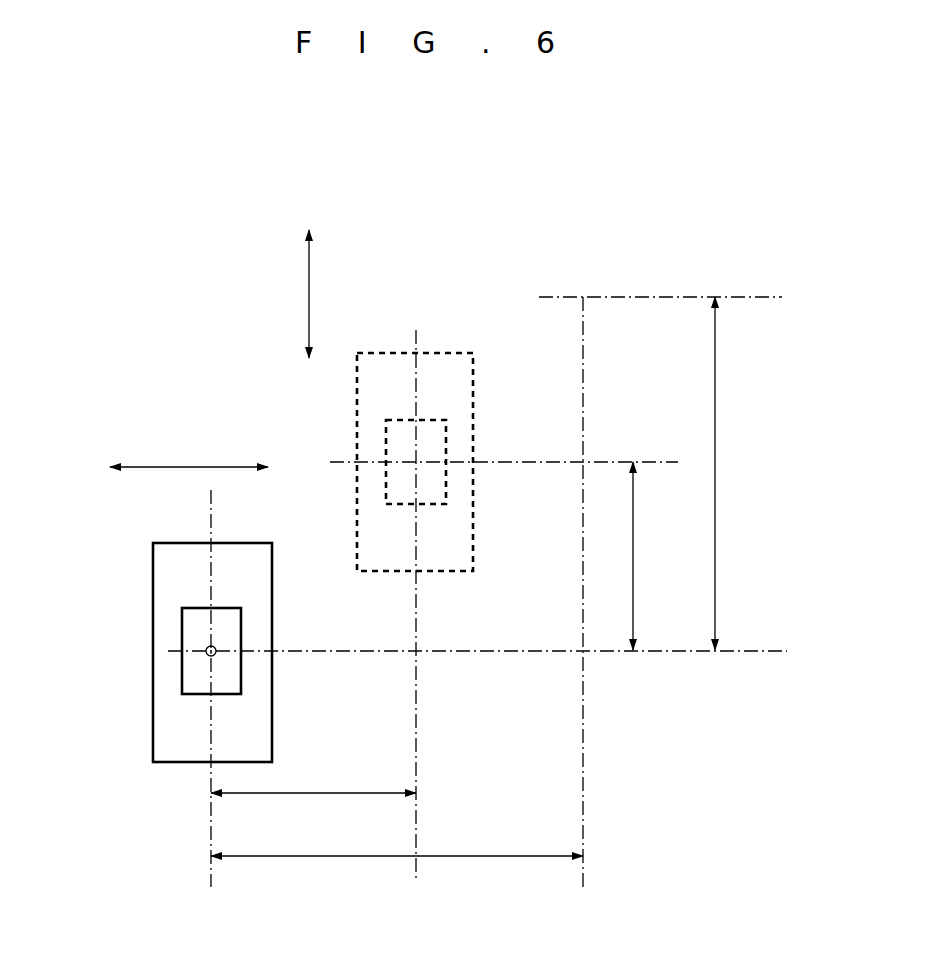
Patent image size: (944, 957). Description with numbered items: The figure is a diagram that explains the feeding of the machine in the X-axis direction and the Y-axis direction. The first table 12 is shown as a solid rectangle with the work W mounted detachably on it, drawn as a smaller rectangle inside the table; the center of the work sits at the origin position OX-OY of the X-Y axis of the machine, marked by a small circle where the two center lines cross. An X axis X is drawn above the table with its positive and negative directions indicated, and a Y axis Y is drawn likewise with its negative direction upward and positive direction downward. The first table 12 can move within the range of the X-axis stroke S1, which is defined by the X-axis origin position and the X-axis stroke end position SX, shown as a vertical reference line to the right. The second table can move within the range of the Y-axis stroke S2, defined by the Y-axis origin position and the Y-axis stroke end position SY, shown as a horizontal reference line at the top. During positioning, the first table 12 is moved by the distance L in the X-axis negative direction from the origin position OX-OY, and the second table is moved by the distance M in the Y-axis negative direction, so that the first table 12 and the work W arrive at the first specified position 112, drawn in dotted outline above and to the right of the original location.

The first table 12 is at (171, 573).
The first specified position 112 is at (432, 365).
The work W is at (193, 632).
The X-axis stroke end position SX is at (585, 752).
The Y-axis stroke end position SY is at (625, 297).
The origin position of the X-Y axis OX-OY is at (200, 661).
The X-axis X is at (189, 457).
The Y-axis Y is at (300, 297).
The distance M is at (647, 556).
The distance L is at (313, 809).
The X-axis stroke S1 is at (397, 872).
The Y-axis stroke S2 is at (735, 473).